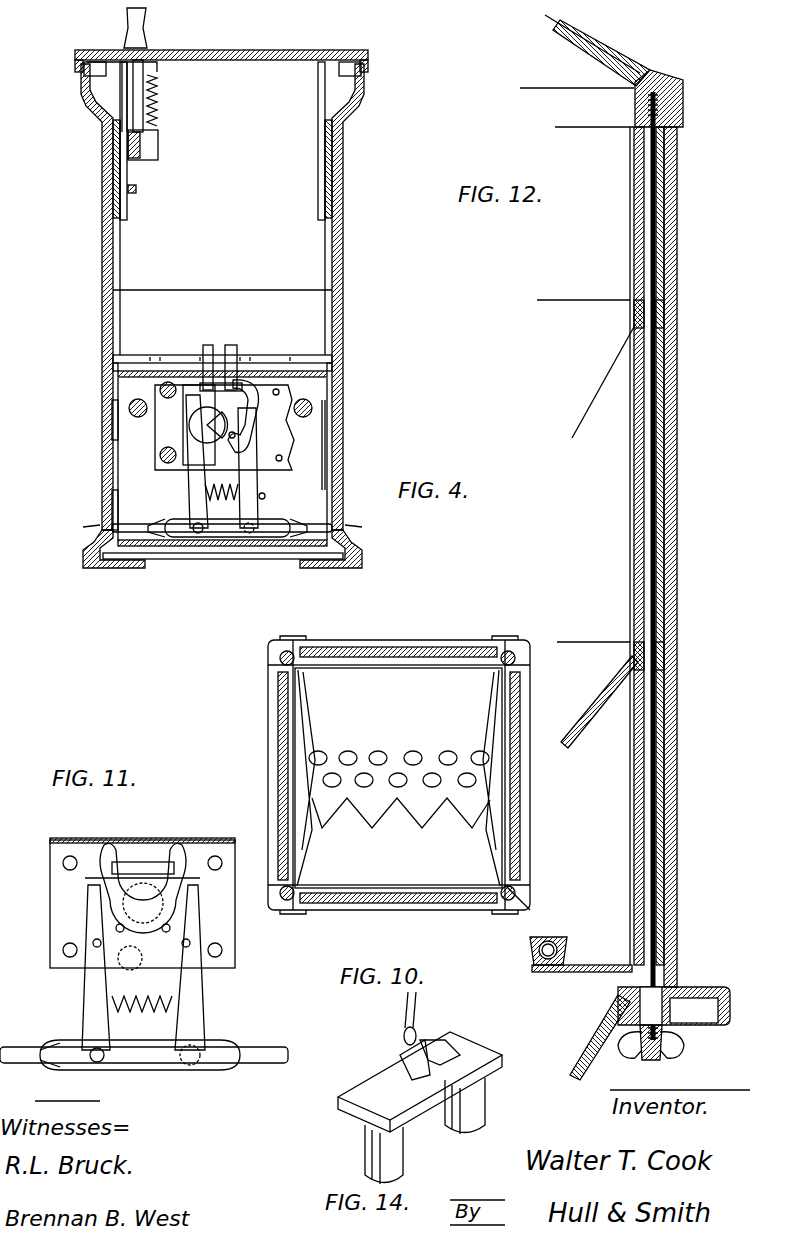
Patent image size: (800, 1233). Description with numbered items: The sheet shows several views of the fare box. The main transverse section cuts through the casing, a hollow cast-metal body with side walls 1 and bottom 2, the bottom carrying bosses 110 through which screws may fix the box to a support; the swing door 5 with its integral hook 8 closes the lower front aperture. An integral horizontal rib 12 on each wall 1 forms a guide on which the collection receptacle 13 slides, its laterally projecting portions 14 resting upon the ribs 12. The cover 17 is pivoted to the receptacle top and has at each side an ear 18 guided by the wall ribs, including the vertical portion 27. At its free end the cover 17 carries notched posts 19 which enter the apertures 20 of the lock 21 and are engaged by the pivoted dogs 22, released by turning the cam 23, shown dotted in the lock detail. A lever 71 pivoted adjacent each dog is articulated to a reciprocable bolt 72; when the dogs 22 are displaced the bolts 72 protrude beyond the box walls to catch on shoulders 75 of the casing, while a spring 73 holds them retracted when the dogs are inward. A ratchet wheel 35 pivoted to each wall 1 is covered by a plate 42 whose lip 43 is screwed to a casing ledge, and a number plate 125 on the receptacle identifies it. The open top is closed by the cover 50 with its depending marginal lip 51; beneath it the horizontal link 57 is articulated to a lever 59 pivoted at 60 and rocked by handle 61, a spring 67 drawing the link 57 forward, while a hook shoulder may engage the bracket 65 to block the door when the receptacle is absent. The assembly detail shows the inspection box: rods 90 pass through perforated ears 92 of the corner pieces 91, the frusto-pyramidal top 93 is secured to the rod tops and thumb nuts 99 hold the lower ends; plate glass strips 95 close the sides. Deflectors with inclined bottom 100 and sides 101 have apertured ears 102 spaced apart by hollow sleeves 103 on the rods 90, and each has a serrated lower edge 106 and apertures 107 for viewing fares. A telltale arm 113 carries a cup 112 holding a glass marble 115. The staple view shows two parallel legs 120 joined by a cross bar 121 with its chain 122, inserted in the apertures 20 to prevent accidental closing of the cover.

In FIG. 4, the walls 1 is at (102, 256).
In FIG. 4, the bottom 2 is at (315, 568).
In FIG. 4, the swing door 5 is at (222, 302).
In FIG. 4, the hook 8 is at (112, 430).
In FIG. 4, the rib 12 is at (112, 392).
In FIG. 4, the collection receptacle 13 is at (122, 500).
In FIG. 4, the laterally projecting portion 14 is at (108, 372).
In FIG. 4, the cover 17 is at (270, 368).
In FIG. 4, the ear 18 is at (106, 357).
In FIG. 4, the notched posts 19 is at (210, 352).
In FIG. 10, the apertures 20 is at (166, 840).
In FIG. 4, the lock 21 is at (220, 440).
In FIG. 10, the lock 21 is at (56, 907).
In FIG. 4, the pivoted dogs 22 is at (252, 400).
In FIG. 10, the pivoted dogs 22 is at (142, 888).
In FIG. 4, the cam 23 is at (212, 425).
In FIG. 10, the cam 23 is at (140, 926).
In FIG. 4, the vertical portion 27 is at (120, 275).
In FIG. 4, the ratchet wheel 35 is at (114, 174).
In FIG. 4, the plate 42 is at (127, 172).
In FIG. 4, the laterally projecting lip 43 is at (341, 60).
In FIG. 4, the cover 50 is at (275, 50).
In FIG. 12, the cover 50 is at (700, 988).
In FIG. 4, the marginal lip 51 is at (76, 66).
In FIG. 12, the marginal lip 51 is at (722, 1016).
In FIG. 4, the horizontal link 57 is at (160, 138).
In FIG. 4, the lever 59 is at (143, 120).
In FIG. 4, the pivot 60 is at (165, 56).
In FIG. 4, the handle 61 is at (132, 24).
In FIG. 4, the bracket 65 is at (138, 192).
In FIG. 4, the spring 67 is at (158, 92).
In FIG. 4, the lever 71 is at (193, 500).
In FIG. 10, the lever 71 is at (90, 982).
In FIG. 4, the reciprocable bolt 72 is at (145, 526).
In FIG. 10, the reciprocable bolt 72 is at (22, 1064).
In FIG. 4, the spring 73 is at (222, 494).
In FIG. 10, the spring 73 is at (144, 998).
In FIG. 4, the shoulders 75 is at (102, 518).
In FIG. 12, the rods 90 is at (648, 610).
In FIG. 11, the rods 90 is at (282, 660).
In FIG. 12, the corner piece 91 is at (672, 492).
In FIG. 11, the corner piece 91 is at (510, 642).
In FIG. 12, the perforated ears 92 is at (640, 135).
In FIG. 12, the frusto-pyramidal top 93 is at (640, 78).
In FIG. 11, the plate glass strips 95 is at (440, 650).
In FIG. 12, the thumb nuts 99 is at (680, 1046).
In FIG. 12, the inclined bottom 100 is at (612, 708).
In FIG. 11, the inclined bottom 100 is at (398, 778).
In FIG. 12, the sides 101 is at (567, 306).
In FIG. 12, the apertured ears 102 is at (662, 318).
In FIG. 11, the apertured ears 102 is at (530, 896).
In FIG. 12, the hollow sleeves 103 is at (660, 250).
In FIG. 11, the serrated lower edge 106 is at (392, 822).
In FIG. 11, the apertures 107 is at (398, 778).
In FIG. 4, the bosses 110 is at (124, 568).
In FIG. 12, the cup 112 is at (566, 950).
In FIG. 12, the arm 113 is at (582, 972).
In FIG. 12, the glass marble 115 is at (552, 942).
In FIG. 14, the legs 120 is at (404, 1150).
In FIG. 14, the cross bar 121 is at (420, 1082).
In FIG. 14, the chain 122 is at (406, 1018).
In FIG. 4, the number plate 125 is at (328, 452).